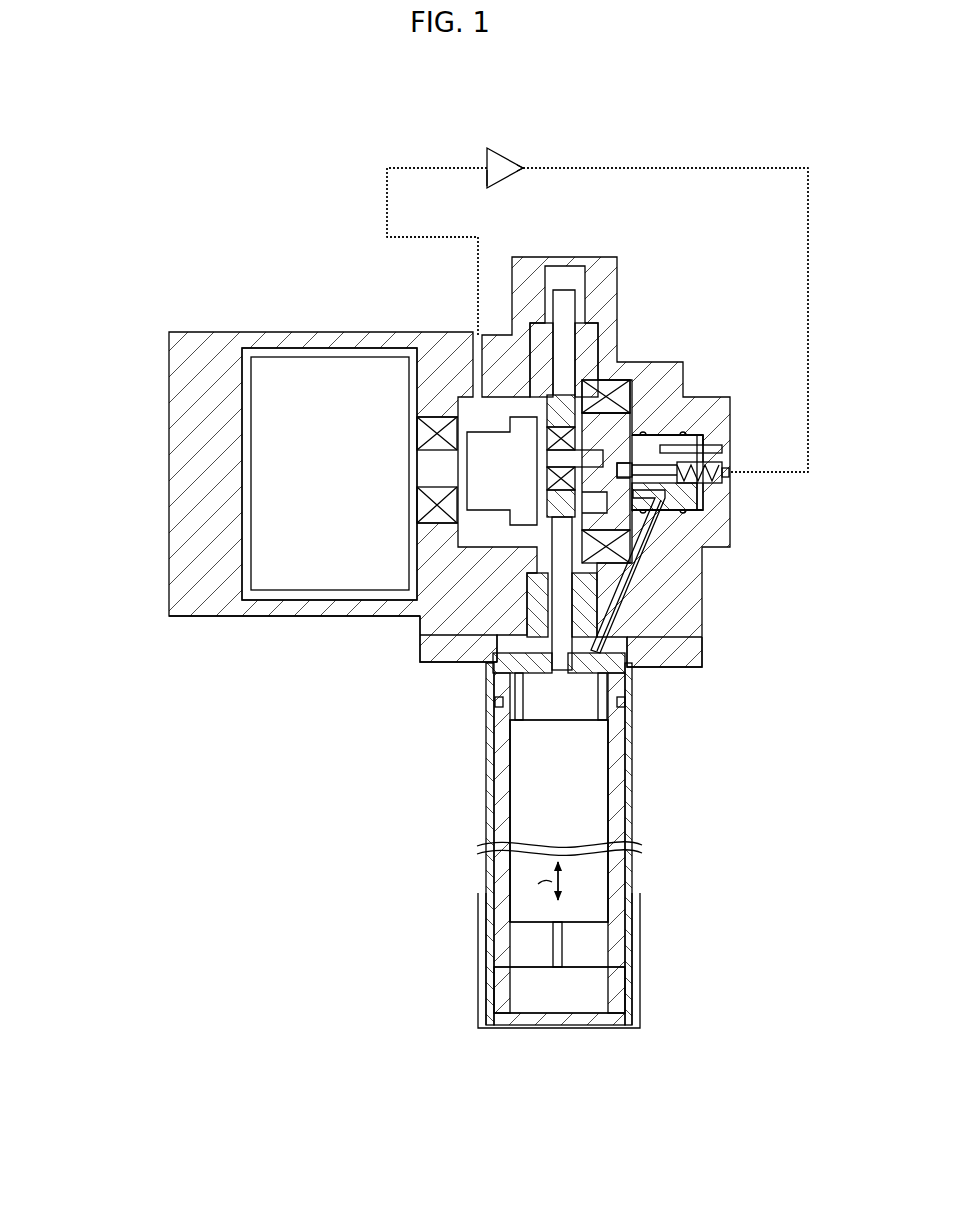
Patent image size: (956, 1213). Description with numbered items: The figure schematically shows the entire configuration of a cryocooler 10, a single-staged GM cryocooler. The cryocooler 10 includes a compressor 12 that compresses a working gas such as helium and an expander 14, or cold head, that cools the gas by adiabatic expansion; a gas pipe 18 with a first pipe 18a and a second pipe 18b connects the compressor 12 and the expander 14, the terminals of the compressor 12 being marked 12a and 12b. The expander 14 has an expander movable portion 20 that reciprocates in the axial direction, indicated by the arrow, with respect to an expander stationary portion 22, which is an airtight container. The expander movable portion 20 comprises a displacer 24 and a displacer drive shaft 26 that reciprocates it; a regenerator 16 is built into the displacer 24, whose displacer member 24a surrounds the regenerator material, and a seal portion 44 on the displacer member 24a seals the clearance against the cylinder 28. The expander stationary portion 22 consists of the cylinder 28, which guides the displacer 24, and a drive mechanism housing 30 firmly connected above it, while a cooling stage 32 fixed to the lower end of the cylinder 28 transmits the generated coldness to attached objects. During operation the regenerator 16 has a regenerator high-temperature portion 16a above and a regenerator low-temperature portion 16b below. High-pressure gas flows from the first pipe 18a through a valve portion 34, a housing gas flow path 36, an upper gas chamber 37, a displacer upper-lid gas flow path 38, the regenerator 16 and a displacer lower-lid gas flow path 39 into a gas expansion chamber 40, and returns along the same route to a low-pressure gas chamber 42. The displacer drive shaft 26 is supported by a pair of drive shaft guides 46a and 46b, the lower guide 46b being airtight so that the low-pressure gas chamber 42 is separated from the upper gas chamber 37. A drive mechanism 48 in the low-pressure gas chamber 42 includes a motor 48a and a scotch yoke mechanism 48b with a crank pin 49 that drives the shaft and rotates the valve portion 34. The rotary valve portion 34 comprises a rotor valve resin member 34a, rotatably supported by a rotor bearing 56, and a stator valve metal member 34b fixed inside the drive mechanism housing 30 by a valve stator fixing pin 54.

The cryocooler 10 is at (426, 1116).
The compressor 12 is at (503, 180).
The output terminal 12a is at (524, 172).
The input terminal 12b is at (485, 176).
The expander 14 is at (156, 552).
The regenerator 16 is at (742, 812).
The regenerator high-temperature portion 16a is at (590, 778).
The regenerator low-temperature portion 16b is at (588, 903).
The gas pipe 18 is at (610, 123).
The first pipe 18a is at (583, 168).
The second pipe 18b is at (422, 168).
The expander movable portion 20 is at (388, 718).
The expander stationary portion 22 is at (195, 660).
The displacer 24 is at (487, 795).
The displacer member 24a is at (620, 880).
The displacer drive shaft 26 is at (512, 718).
The cylinder 28 is at (420, 648).
The drive mechanism housing 30 is at (247, 617).
The cooling stage 32 is at (478, 916).
The valve portion 34 is at (764, 320).
The rotor valve resin member 34a is at (615, 395).
The stator valve metal member 34b is at (622, 440).
The housing gas flow path 36 is at (660, 536).
The upper gas chamber 37 is at (700, 656).
The displacer upper-lid gas flow path 38 is at (607, 688).
The displacer lower-lid gas flow path 39 is at (550, 960).
The gas expansion chamber 40 is at (613, 995).
The low-pressure gas chamber 42 is at (490, 530).
The seal portion 44 is at (495, 703).
The drive shaft guide 46a is at (590, 335).
The drive shaft guide 46b is at (537, 593).
The drive mechanism 48 is at (85, 355).
The motor 48a is at (277, 378).
The scotch yoke mechanism 48b is at (547, 407).
The crank pin 49 is at (540, 460).
The valve stator fixing pin 54 is at (712, 447).
The rotor bearing 56 is at (640, 588).